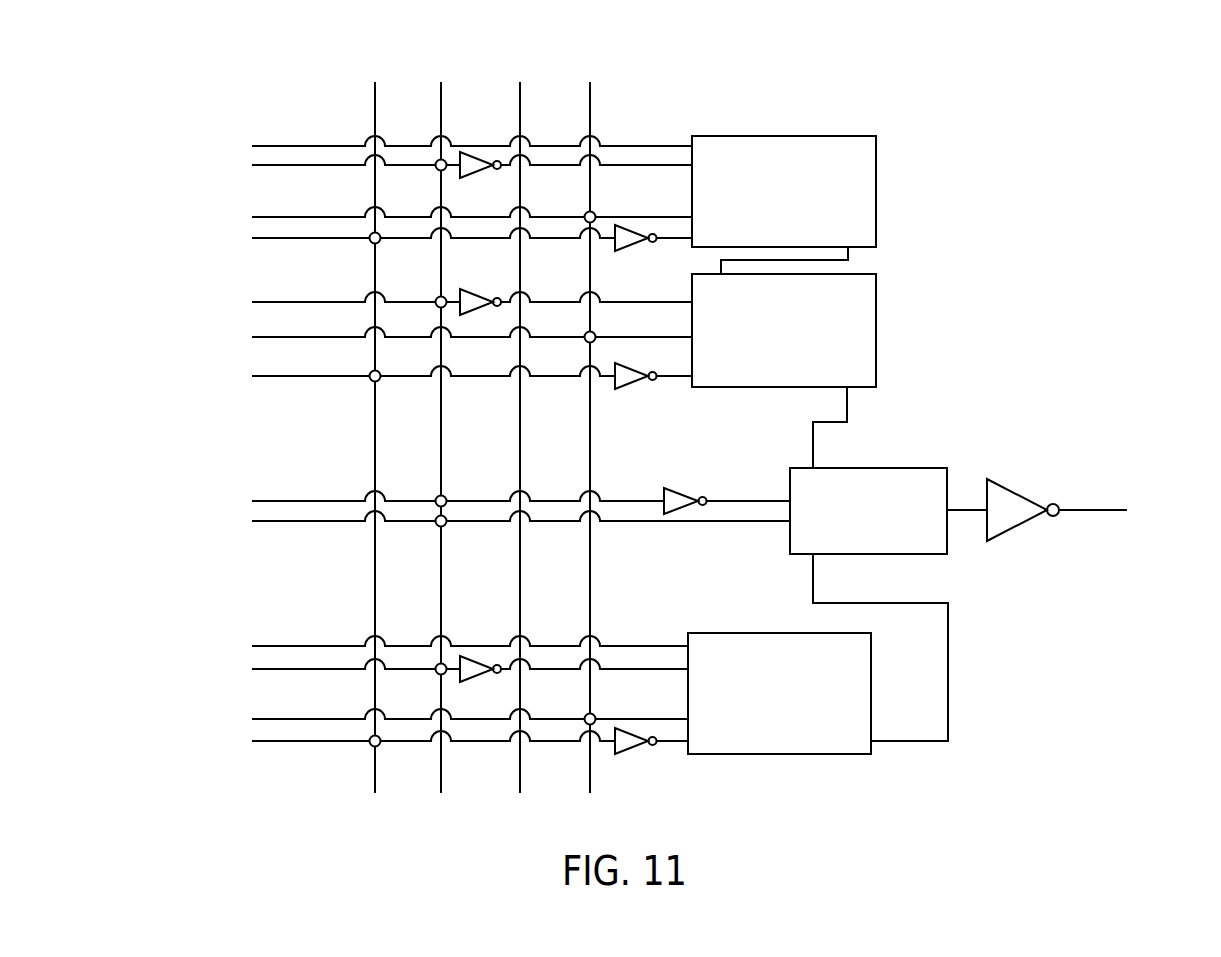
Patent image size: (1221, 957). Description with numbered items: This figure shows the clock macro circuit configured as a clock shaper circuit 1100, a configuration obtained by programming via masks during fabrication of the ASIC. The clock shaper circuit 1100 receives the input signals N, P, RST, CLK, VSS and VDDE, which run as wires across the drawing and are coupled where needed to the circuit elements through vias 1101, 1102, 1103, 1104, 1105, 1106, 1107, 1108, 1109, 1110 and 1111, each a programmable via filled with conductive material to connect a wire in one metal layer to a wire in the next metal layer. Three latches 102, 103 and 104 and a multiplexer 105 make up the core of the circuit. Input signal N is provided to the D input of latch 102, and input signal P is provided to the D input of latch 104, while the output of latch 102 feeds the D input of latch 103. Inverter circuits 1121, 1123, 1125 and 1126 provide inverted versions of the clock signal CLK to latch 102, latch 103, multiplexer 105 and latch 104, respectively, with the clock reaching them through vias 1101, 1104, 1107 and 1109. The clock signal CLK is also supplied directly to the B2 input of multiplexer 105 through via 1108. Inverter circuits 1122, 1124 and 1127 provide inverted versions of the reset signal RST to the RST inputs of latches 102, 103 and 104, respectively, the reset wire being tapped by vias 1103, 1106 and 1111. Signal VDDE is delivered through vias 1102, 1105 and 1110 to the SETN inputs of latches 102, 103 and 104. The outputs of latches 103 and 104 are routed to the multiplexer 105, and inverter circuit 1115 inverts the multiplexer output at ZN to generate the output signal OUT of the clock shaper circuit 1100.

The clock shaper circuit 1100 is at (209, 66).
The latch 102 is at (790, 136).
The latch 103 is at (757, 388).
The latch 104 is at (720, 633).
The multiplexer 105 is at (900, 468).
The via 1101 is at (441, 171).
The via 1102 is at (590, 211).
The via 1103 is at (375, 244).
The via 1104 is at (441, 296).
The via 1105 is at (590, 331).
The via 1106 is at (375, 382).
The via 1107 is at (441, 495).
The via 1108 is at (441, 527).
The via 1109 is at (441, 675).
The via 1110 is at (590, 713).
The via 1111 is at (375, 747).
The inverter circuit 1115 is at (1015, 490).
The inverter circuit 1121 is at (463, 173).
The inverter circuit 1122 is at (620, 250).
The inverter circuit 1123 is at (463, 290).
The inverter circuit 1124 is at (620, 388).
The inverter circuit 1125 is at (669, 489).
The inverter circuit 1126 is at (463, 677).
The inverter circuit 1127 is at (620, 753).